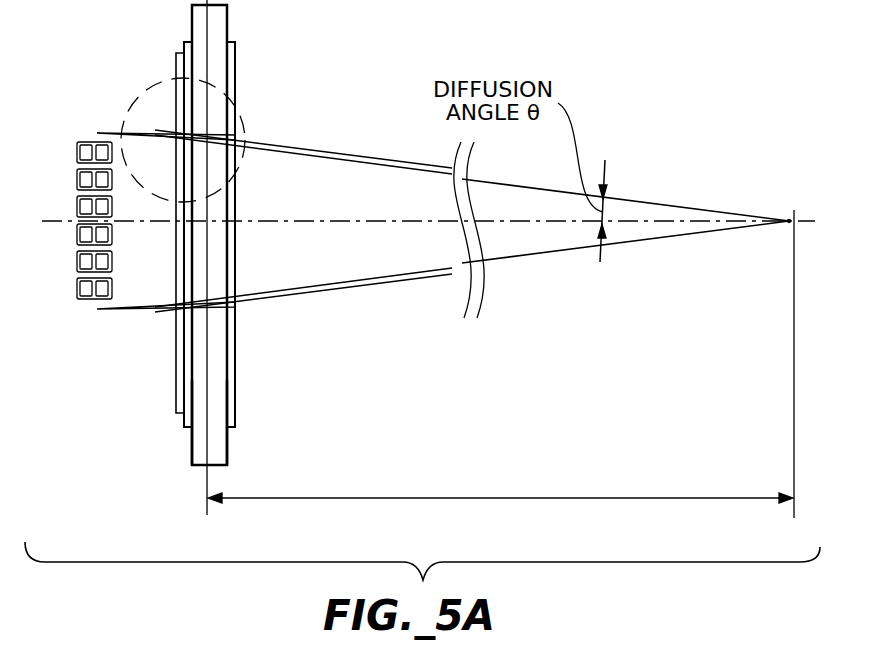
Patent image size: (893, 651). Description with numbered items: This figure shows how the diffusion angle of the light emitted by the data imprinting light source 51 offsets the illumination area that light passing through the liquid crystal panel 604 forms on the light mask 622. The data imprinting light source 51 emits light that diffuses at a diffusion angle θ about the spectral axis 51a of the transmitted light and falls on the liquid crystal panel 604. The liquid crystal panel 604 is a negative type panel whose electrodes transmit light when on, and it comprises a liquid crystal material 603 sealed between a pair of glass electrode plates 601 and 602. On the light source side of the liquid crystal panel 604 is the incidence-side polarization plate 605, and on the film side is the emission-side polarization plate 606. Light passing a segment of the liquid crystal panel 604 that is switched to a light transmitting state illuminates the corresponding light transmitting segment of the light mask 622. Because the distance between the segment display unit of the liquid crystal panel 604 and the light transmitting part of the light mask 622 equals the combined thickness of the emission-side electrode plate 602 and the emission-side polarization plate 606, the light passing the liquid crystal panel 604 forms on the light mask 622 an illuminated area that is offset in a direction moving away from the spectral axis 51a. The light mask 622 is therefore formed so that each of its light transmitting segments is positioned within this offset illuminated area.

The data imprinting light source 51 is at (789, 221).
The spectral axis 51a is at (523, 223).
The glass electrode plate 601 is at (223, 447).
The emission-side electrode plate 602 is at (192, 458).
The liquid crystal material 603 is at (210, 363).
The liquid crystal panel 604 is at (192, 482).
The incidence-side polarization plate 605 is at (233, 402).
The emission-side polarization plate 606 is at (184, 423).
The light mask 622 is at (177, 385).